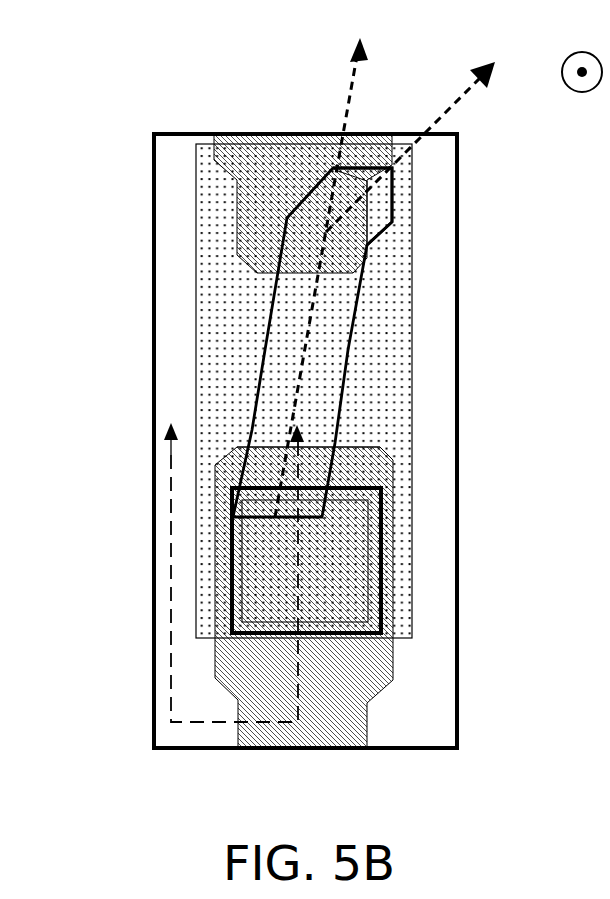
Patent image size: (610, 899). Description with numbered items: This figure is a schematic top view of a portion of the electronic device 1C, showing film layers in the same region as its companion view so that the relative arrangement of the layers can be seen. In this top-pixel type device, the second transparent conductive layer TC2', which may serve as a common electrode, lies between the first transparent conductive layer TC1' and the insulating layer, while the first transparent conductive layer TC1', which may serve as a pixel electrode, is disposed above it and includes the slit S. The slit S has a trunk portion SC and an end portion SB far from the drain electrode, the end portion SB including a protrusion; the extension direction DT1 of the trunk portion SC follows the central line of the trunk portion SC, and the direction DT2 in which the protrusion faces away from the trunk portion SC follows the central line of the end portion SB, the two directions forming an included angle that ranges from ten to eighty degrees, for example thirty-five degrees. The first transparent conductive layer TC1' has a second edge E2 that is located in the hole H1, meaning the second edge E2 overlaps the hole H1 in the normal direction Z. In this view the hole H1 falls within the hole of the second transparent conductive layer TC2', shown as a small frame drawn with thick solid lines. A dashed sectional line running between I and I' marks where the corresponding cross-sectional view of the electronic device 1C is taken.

The second transparent conductive layer TC2' is at (262, 441).
The first transparent conductive layer TC1' is at (239, 391).
The end portion SB is at (408, 208).
The trunk portion SC is at (366, 321).
The slit S is at (547, 248).
The second edge E2 is at (381, 532).
The hole H1 is at (368, 545).
The sectional line I-I' endpoint I is at (231, 560).
The sectional line I-I' endpoint I' is at (300, 419).
The extension direction DT1 is at (329, 261).
The direction in which the protrusion faces away from the trunk portion DT2 is at (422, 127).
The normal direction Z is at (582, 52).
The electronic device 1C is at (518, 814).